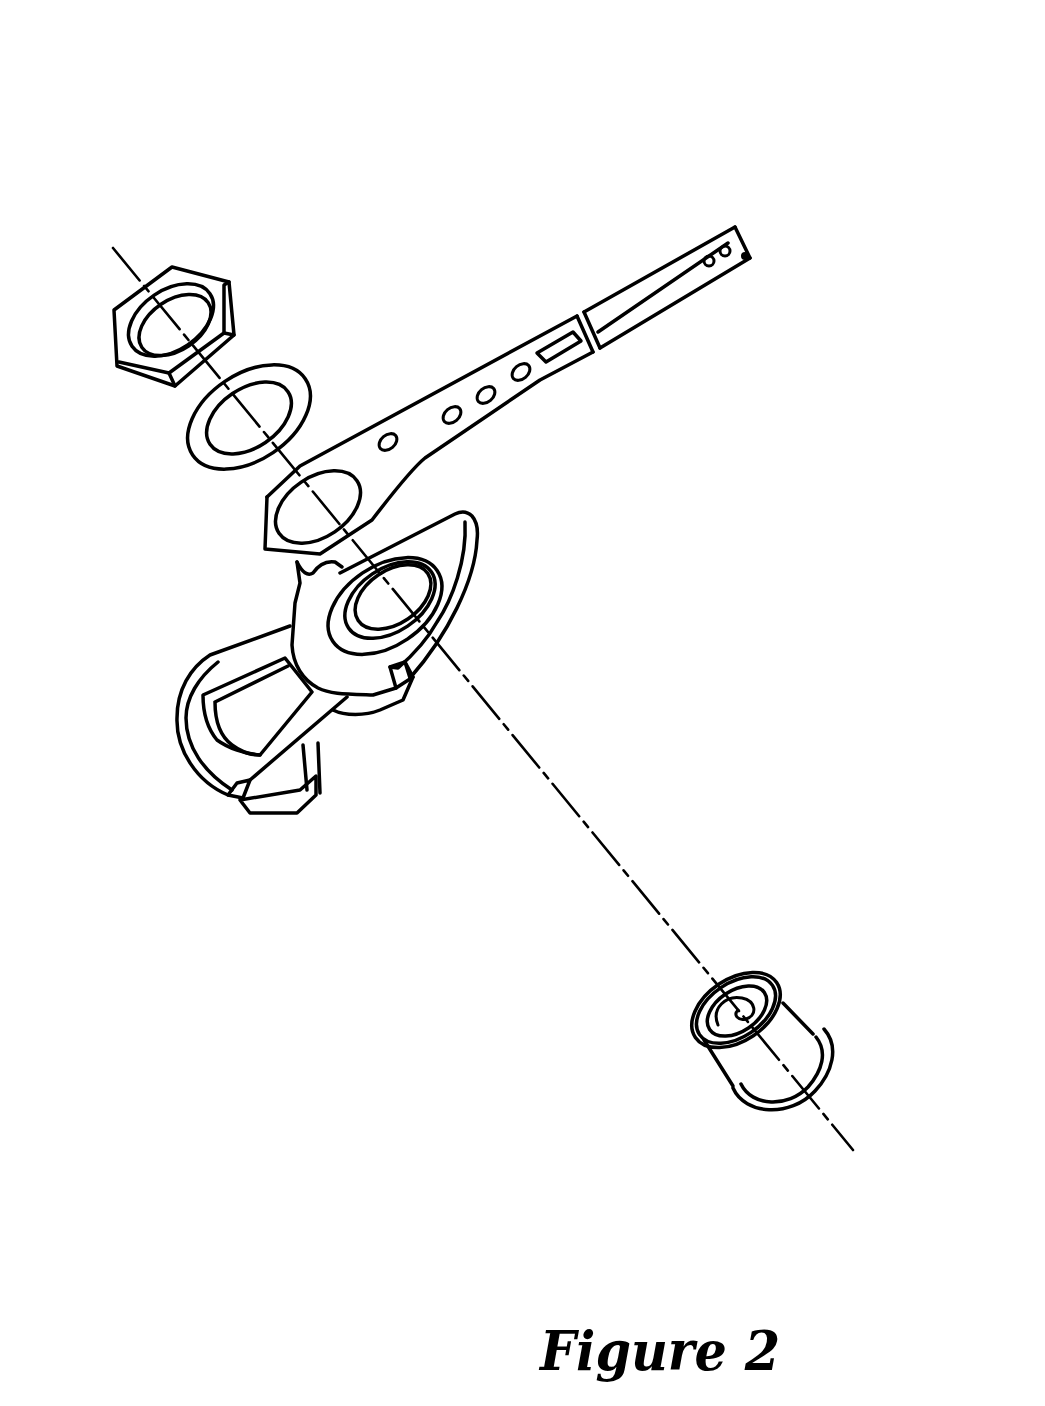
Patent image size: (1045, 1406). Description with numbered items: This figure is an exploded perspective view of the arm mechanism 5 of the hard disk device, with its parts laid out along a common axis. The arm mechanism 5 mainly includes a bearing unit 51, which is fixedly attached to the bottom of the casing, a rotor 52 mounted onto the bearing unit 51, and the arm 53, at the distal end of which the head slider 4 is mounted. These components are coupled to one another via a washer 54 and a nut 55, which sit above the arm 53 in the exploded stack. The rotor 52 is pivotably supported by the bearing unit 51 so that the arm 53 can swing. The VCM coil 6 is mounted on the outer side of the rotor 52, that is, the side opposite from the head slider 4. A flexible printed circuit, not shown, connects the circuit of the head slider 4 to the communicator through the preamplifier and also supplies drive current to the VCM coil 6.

The head slider 4 is at (743, 262).
The arm mechanism 5 is at (535, 157).
The VCM coil 6 is at (173, 710).
The bearing unit 51 is at (797, 1003).
The rotor 52 is at (487, 558).
The arm 53 is at (447, 383).
The washer 54 is at (290, 367).
The nut 55 is at (193, 270).